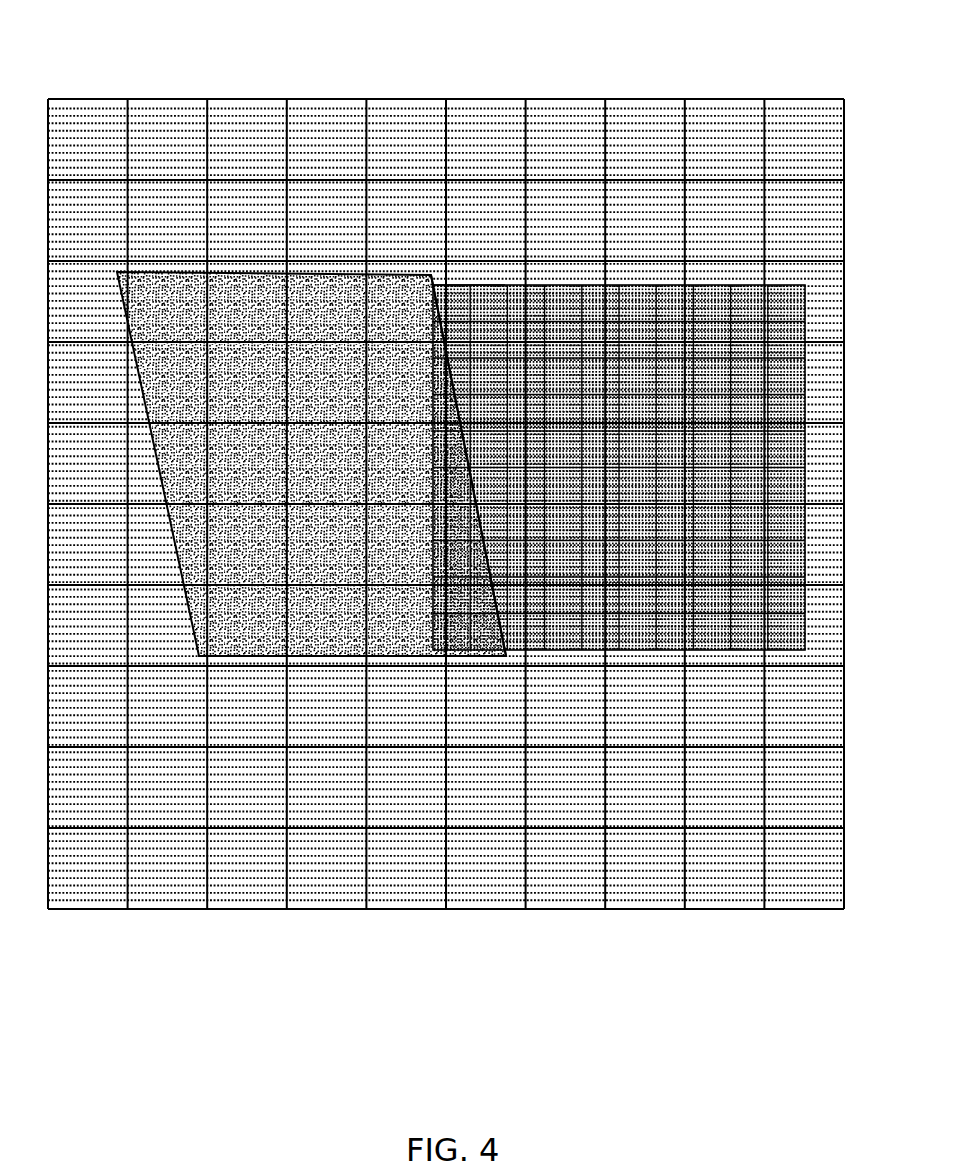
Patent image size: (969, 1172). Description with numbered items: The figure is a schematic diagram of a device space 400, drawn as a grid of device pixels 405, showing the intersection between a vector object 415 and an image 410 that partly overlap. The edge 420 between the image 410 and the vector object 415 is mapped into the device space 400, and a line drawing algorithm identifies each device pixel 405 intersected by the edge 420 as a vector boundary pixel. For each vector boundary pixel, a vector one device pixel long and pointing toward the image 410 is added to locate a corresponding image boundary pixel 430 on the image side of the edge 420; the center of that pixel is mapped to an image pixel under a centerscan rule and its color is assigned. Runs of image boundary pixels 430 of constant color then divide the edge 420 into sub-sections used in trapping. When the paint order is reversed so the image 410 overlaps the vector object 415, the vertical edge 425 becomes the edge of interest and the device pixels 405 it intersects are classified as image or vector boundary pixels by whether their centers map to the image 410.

The device space 400 is at (446, 462).
The device pixel 405 is at (247, 124).
The image 410 is at (632, 427).
The vector object 415 is at (474, 454).
The edge 420 is at (495, 623).
The vertical edge 425 is at (425, 580).
The image boundary pixels 430 is at (476, 262).